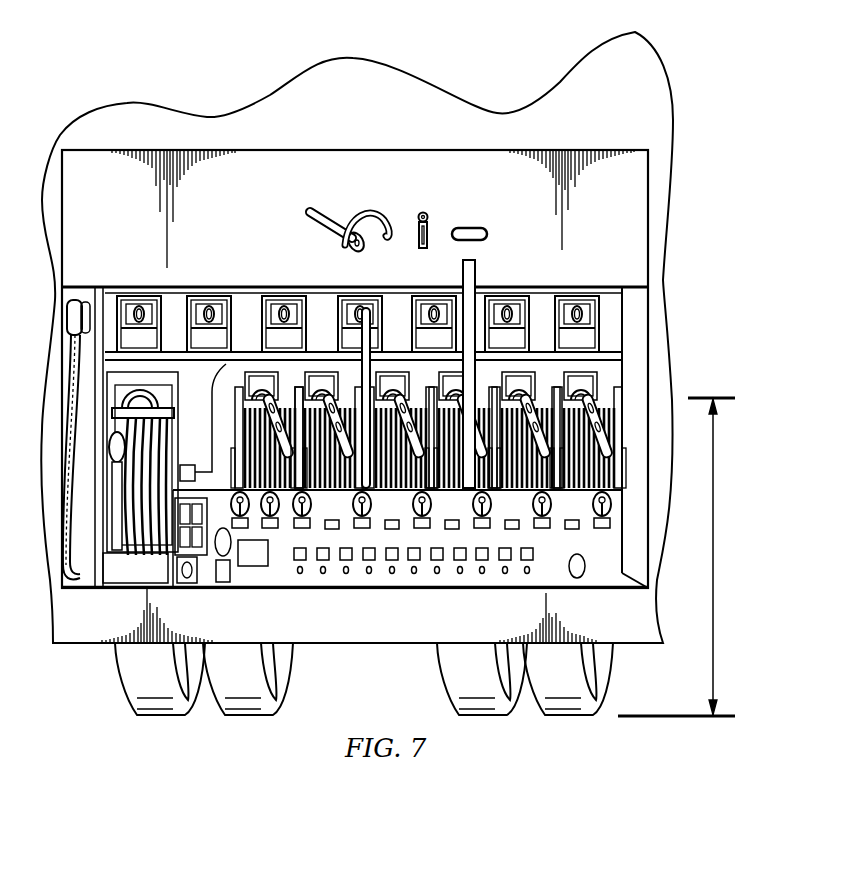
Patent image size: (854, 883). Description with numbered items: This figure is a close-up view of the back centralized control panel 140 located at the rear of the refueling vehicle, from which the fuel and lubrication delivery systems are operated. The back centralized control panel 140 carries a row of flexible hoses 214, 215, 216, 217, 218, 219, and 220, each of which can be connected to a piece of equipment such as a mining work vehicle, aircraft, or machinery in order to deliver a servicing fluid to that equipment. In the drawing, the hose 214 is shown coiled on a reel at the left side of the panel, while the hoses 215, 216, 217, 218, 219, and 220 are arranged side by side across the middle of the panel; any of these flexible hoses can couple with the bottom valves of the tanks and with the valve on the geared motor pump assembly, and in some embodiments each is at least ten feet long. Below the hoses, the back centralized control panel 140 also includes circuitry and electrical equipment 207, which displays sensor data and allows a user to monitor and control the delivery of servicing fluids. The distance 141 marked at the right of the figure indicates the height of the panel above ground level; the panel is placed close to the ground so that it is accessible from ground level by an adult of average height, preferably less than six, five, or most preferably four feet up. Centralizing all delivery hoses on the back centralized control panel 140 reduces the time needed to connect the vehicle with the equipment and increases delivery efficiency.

The back centralized control panel 140 is at (176, 39).
The distance 141 is at (710, 587).
The circuitry and electrical equipment 207 is at (253, 566).
The flexible hose 214 is at (152, 399).
The flexible hose 215 is at (266, 385).
The flexible hose 216 is at (326, 385).
The flexible hose 217 is at (392, 385).
The flexible hose 218 is at (455, 385).
The flexible hose 219 is at (518, 385).
The flexible hose 220 is at (577, 385).